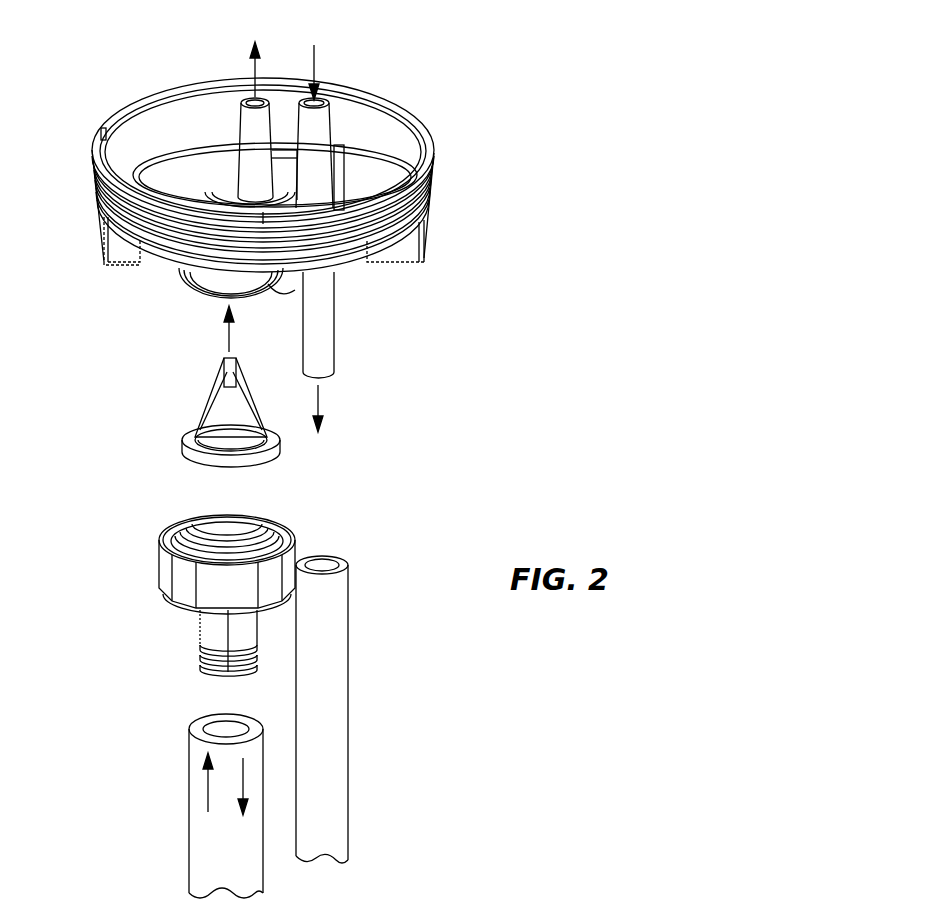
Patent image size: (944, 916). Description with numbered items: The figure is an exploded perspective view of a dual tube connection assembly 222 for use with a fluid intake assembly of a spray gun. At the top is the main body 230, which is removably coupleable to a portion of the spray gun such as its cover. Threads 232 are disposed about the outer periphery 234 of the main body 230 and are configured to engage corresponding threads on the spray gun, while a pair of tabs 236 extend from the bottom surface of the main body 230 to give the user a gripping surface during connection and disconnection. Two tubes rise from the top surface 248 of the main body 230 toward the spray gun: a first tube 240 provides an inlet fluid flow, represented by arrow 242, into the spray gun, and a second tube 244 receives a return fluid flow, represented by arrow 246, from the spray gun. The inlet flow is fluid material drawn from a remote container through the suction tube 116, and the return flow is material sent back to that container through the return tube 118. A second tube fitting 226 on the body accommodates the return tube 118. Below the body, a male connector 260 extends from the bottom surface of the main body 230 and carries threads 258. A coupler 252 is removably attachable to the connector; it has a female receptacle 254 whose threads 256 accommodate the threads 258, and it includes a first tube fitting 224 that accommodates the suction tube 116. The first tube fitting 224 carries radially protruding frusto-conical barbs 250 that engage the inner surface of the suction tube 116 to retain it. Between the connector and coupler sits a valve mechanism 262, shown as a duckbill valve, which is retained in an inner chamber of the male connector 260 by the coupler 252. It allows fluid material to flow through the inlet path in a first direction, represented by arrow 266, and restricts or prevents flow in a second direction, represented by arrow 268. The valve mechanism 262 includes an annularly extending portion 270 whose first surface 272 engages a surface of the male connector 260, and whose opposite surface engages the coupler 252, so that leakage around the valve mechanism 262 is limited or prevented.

The dual tube connection assembly 222 is at (259, 236).
The first tube 240 is at (243, 128).
The inlet fluid flow arrow 242 is at (253, 70).
The second tube 244 is at (322, 128).
The return fluid flow arrow 246 is at (314, 62).
The top surface 248 is at (360, 177).
The main body 230 is at (417, 128).
The threads 232 is at (430, 182).
The outer periphery 234 is at (115, 182).
The tabs 236 is at (125, 260).
The male connector 260 is at (195, 290).
The threads 258 is at (268, 293).
The second tube fitting 226 is at (320, 320).
The valve mechanism 262 is at (218, 413).
The first surface 272 is at (188, 435).
The annularly extending portion 270 is at (196, 442).
The threads 256 is at (253, 537).
The coupler 252 is at (204, 553).
The female receptacle 254 is at (172, 580).
The first tube fitting 224 is at (199, 650).
The barbs 250 is at (220, 660).
The first direction arrow 266 is at (208, 780).
The second direction arrow 268 is at (245, 777).
The return tube 118 is at (342, 777).
The suction tube 116 is at (200, 855).